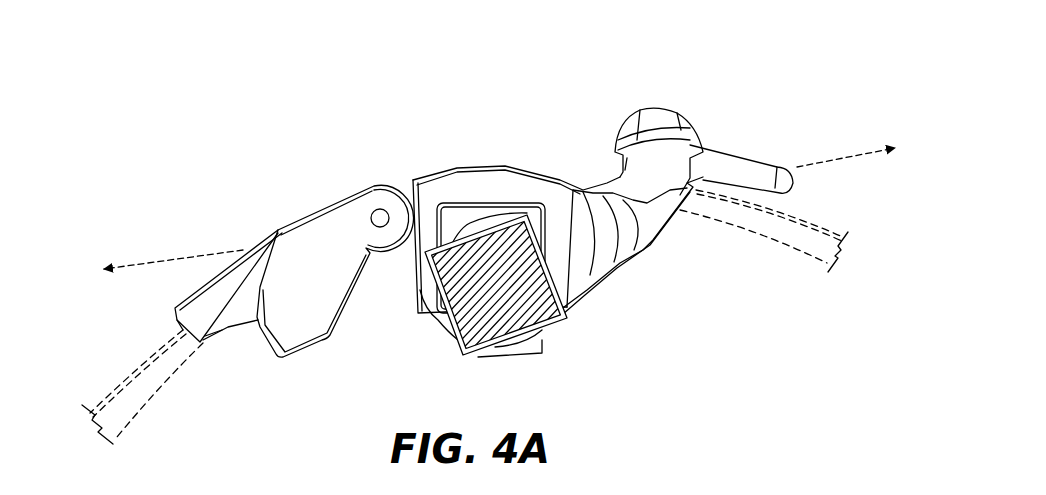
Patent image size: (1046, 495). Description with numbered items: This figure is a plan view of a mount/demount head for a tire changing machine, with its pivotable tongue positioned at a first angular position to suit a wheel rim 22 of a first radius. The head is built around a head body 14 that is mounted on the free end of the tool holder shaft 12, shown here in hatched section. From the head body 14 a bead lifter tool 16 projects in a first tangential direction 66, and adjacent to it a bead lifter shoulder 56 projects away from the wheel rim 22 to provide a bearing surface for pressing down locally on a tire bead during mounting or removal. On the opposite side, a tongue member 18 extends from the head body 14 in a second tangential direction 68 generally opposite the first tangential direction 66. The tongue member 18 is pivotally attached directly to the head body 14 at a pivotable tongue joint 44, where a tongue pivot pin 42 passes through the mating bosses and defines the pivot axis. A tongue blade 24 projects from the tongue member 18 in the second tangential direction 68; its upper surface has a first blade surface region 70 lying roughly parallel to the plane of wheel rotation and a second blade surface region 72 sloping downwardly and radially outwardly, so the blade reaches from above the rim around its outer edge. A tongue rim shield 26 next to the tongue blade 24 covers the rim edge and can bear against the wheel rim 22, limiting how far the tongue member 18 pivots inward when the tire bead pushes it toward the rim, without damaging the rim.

The tool holder shaft 12 is at (467, 350).
The head body 14 is at (488, 175).
The bead lifter tool 16 is at (738, 153).
The tongue member 18 is at (320, 212).
The wheel rim 22 is at (792, 218).
The tongue blade 24 is at (231, 328).
The tongue rim shield 26 is at (222, 258).
The tongue pivot pin 42 is at (380, 220).
The pivotable tongue joint 44 is at (381, 177).
The bead lifter shoulder 56 is at (655, 112).
The first tangential direction 66 is at (882, 145).
The second tangential direction 68 is at (180, 255).
The first blade surface region 70 is at (216, 330).
The second blade surface region 72 is at (186, 301).